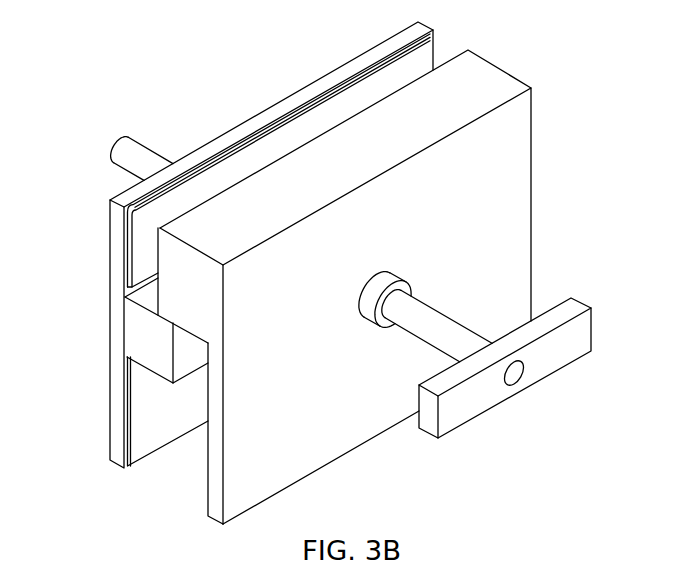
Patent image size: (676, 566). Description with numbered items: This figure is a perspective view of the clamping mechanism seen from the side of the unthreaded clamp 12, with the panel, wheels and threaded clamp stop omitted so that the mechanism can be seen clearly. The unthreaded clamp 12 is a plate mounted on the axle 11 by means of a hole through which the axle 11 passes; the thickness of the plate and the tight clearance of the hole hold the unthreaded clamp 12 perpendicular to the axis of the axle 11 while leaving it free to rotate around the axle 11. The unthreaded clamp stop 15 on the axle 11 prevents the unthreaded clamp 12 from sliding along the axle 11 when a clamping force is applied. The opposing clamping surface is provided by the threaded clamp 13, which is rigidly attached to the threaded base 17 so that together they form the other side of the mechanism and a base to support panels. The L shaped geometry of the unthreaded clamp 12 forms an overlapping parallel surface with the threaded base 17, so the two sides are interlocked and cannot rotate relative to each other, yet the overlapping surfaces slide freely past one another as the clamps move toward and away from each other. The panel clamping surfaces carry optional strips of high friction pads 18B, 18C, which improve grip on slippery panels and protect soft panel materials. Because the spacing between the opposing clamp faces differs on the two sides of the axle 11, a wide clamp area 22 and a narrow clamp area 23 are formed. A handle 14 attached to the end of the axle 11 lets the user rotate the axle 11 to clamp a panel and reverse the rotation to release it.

The axle 11 is at (133, 118).
The unthreaded clamp 12 is at (320, 366).
The threaded clamp 13 is at (98, 259).
The handle 14 is at (559, 383).
The unthreaded clamp stop 15 is at (423, 270).
The threaded base 17 is at (148, 333).
The high friction pad 18B is at (160, 408).
The high friction pad 18C is at (333, 110).
The wide clamp area 22 is at (198, 471).
The narrow clamp area 23 is at (458, 43).